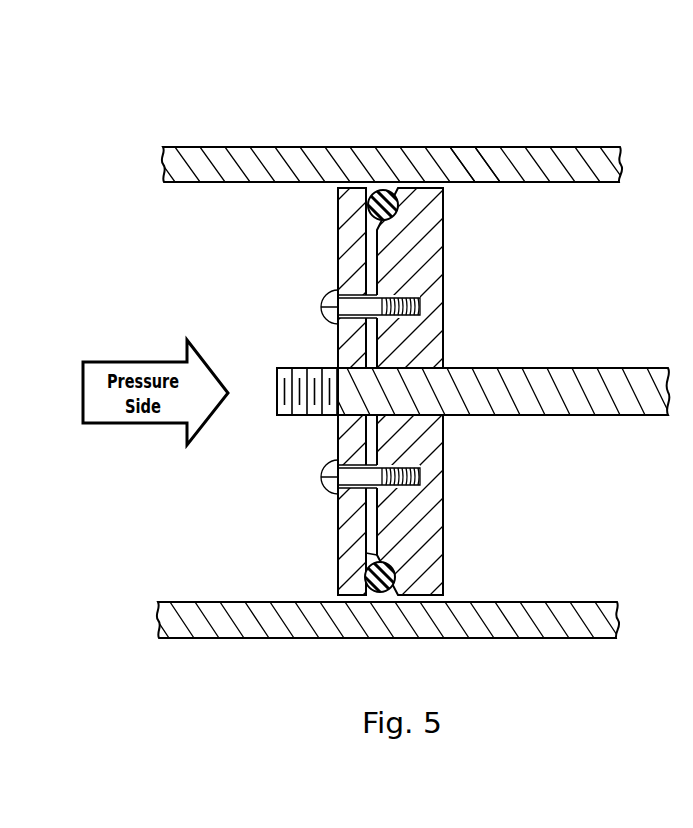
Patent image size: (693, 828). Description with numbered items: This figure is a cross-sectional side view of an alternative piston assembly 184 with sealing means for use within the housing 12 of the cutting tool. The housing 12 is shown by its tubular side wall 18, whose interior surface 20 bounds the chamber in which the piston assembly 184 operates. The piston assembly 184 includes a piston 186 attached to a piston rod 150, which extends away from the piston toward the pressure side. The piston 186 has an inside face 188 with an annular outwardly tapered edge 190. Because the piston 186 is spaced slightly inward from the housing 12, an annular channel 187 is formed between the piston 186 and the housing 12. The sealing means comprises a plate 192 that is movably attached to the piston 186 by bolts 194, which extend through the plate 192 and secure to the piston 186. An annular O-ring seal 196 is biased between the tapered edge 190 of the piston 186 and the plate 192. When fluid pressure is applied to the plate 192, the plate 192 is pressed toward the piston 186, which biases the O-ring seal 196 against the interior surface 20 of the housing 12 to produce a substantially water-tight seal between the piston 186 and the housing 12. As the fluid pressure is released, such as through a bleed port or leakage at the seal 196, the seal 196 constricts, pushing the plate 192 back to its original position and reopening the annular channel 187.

The housing 12 is at (293, 150).
The tubular side wall 18 is at (472, 157).
The interior surface 20 is at (536, 185).
The annular channel 187 is at (433, 183).
The piston assembly 184 is at (201, 272).
The plate 192 is at (338, 245).
The piston 186 is at (443, 264).
The inside face 188 is at (370, 458).
The bolts 194 is at (320, 310).
The piston rod 150 is at (563, 368).
The annular outwardly tapered edge 190 is at (368, 565).
The annular O-ring seal 196 is at (391, 591).